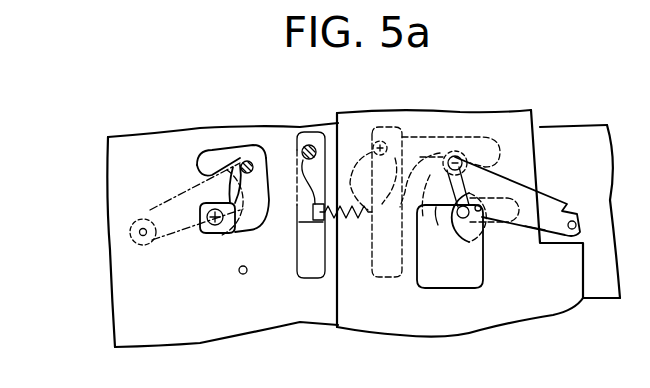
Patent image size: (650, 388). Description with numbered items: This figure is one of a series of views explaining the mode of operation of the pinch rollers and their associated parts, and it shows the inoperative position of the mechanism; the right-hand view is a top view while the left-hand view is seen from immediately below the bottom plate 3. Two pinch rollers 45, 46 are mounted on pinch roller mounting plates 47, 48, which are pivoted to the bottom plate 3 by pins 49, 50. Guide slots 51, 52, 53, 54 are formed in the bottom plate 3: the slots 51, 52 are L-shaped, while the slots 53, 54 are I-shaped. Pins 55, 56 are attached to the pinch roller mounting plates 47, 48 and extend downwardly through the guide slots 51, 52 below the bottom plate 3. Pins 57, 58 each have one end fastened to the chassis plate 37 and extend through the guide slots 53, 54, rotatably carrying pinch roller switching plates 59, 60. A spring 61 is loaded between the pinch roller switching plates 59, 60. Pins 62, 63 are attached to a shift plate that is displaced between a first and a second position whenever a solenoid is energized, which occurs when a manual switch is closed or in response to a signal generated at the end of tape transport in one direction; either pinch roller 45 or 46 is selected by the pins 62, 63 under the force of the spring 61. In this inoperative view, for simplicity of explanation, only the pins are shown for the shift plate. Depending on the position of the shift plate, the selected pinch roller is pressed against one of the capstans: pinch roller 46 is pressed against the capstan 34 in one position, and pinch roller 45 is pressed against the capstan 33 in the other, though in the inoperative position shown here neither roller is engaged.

The bottom plate 3 is at (224, 325).
The capstan 33 is at (246, 273).
The capstan 34 is at (468, 273).
The chassis plate 37 is at (374, 303).
The pinch roller 45 is at (218, 236).
The pinch roller 46 is at (492, 233).
The pinch roller mounting plate 47 is at (155, 245).
The pinch roller mounting plate 48 is at (533, 230).
The pin 49 is at (142, 228).
The pin 50 is at (572, 220).
The guide slot 51 is at (267, 217).
The guide slot 52 is at (438, 225).
The guide slot 53 is at (310, 278).
The guide slot 54 is at (378, 127).
The pin 55 is at (247, 160).
The pin 56 is at (455, 156).
The pin 57 is at (310, 146).
The pin 58 is at (371, 202).
The pinch roller switching plate 59 is at (207, 172).
The pinch roller switching plate 60 is at (492, 130).
The spring 61 is at (355, 222).
The pin 62 is at (200, 232).
The pin 63 is at (477, 212).